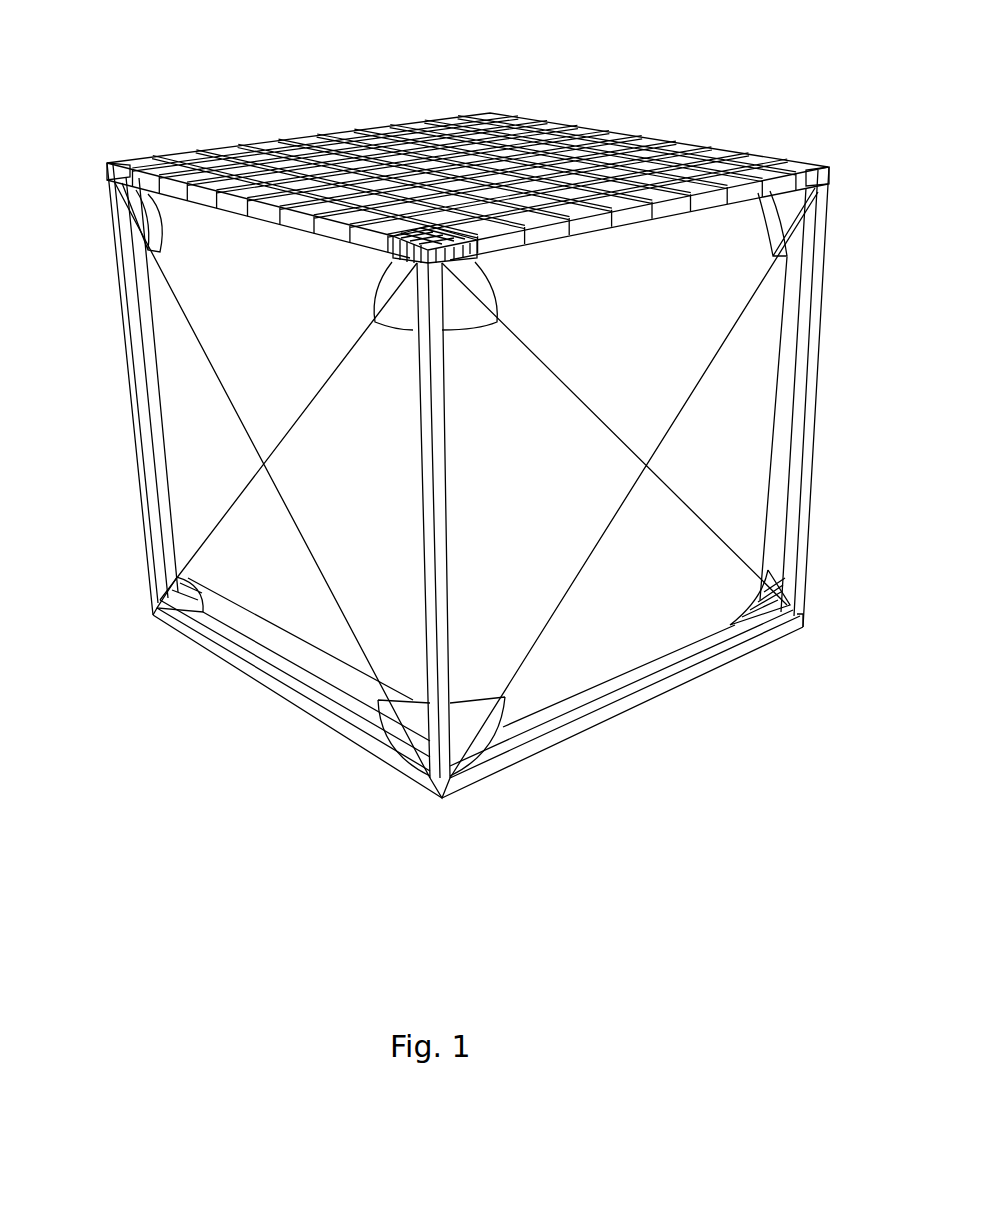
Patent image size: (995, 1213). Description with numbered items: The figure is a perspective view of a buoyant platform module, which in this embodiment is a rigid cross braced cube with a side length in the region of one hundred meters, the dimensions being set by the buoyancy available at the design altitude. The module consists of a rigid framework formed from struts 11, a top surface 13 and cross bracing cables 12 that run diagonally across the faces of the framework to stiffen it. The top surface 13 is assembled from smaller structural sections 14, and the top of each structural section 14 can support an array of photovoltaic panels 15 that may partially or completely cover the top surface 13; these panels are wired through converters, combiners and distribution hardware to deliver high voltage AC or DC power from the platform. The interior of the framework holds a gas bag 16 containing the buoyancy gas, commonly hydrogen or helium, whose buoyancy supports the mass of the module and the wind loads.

The struts 11 is at (820, 327).
The cross bracing cables 12 is at (667, 433).
The top surface 13 is at (430, 167).
The structural sections 14 is at (122, 162).
The photovoltaic panels 15 is at (428, 232).
The gas bag 16 is at (160, 405).